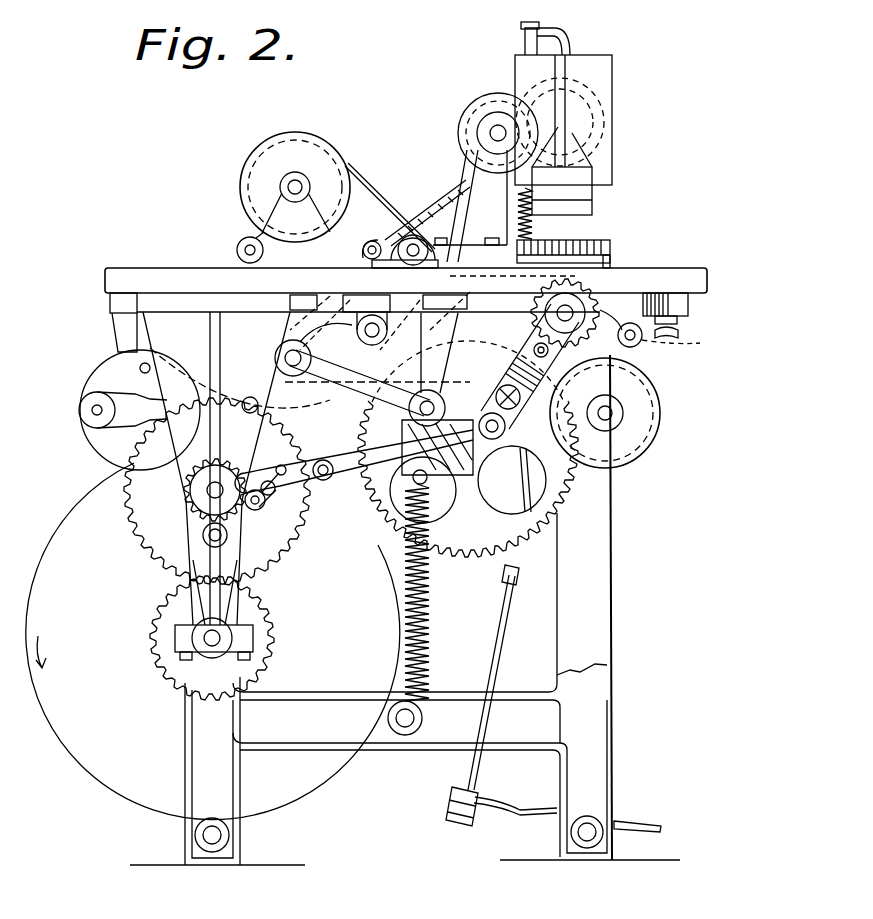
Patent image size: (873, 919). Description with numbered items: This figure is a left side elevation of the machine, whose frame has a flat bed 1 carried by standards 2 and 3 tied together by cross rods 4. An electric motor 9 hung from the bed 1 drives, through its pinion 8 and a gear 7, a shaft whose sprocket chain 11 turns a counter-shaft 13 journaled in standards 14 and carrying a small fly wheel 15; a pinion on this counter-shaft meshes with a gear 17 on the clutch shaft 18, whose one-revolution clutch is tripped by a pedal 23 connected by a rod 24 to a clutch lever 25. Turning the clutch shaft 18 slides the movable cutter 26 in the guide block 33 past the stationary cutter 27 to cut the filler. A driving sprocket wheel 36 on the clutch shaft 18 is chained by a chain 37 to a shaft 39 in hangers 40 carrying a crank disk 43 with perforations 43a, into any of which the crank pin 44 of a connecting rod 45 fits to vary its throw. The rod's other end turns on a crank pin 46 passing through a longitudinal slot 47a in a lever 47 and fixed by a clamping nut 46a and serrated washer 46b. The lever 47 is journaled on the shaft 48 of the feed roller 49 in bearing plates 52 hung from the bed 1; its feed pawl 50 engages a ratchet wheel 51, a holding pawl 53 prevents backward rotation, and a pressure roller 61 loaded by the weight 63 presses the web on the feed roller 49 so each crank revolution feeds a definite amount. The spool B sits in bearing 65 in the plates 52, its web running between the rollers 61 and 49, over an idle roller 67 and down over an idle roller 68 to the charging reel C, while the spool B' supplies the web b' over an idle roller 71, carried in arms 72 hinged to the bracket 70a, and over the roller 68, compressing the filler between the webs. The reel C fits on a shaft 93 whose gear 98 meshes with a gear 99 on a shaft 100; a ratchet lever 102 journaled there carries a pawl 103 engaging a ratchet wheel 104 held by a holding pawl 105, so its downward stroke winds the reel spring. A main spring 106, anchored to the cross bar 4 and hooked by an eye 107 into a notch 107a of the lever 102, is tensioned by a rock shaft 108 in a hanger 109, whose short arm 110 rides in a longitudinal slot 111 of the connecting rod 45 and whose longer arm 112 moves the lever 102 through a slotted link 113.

The table or bed 1 is at (142, 278).
The standard 2 is at (598, 738).
The standard 3 is at (590, 642).
The cross rods 4 is at (229, 835).
The gear 7 is at (478, 548).
The pinion 8 is at (354, 457).
The electric motor 9 is at (326, 332).
The sprocket chain 11 is at (478, 168).
The counter-shaft 13 is at (490, 130).
The standards 14 is at (518, 214).
The fly wheel 15 is at (494, 95).
The gear 17 is at (612, 140).
The clutch shaft 18 is at (600, 128).
The pedal 23 is at (620, 820).
The rod 24 is at (522, 42).
The clutch lever 25 is at (568, 34).
The movable knife or cutter 26 is at (592, 205).
The stationary cutter 27 is at (605, 240).
The guide block 33 is at (600, 74).
The driving sprocket wheel 36 is at (590, 120).
The chain 37 is at (440, 192).
The shaft 39 is at (120, 450).
The hangers 40 is at (112, 336).
The crank disk 43 is at (100, 445).
The perforations 43a is at (140, 367).
The crank pin 44 is at (92, 408).
The connecting rod 45 is at (90, 420).
The crank pin 46 is at (575, 430).
The clamping nut 46a is at (497, 390).
The serrated washer 46b is at (547, 356).
The lever 47 is at (507, 427).
The longitudinal slot 47a is at (512, 480).
The shaft 48 is at (590, 296).
The feed roller 49 is at (580, 246).
The feed pawl 50 is at (640, 360).
The ratchet wheel 51 is at (670, 338).
The bearing plates 52 is at (655, 383).
The holding pawl 53 is at (545, 312).
The pressure roller 61 is at (515, 350).
The weight 63 is at (448, 500).
The bearing 65 is at (612, 422).
The idle roller 67 is at (458, 260).
The idle roller 68 is at (388, 328).
The bracket 70a is at (246, 238).
The idle roller 71 is at (411, 232).
The arms 72 is at (370, 240).
The shaft 93 is at (212, 645).
The gear 98 is at (175, 640).
The gear 99 is at (145, 520).
The shaft 100 is at (192, 496).
The ratchet lever 102 is at (356, 470).
The pawl 103 is at (255, 480).
The ratchet wheel 104 is at (203, 535).
The holding pawl 105 is at (185, 585).
The main spring 106 is at (428, 634).
The eye 107 is at (445, 505).
The notches 107a is at (509, 491).
The rock shaft 108 is at (312, 352).
The hanger 109 is at (440, 352).
The short arm 110 is at (410, 420).
The longitudinal slot 111 is at (200, 365).
The longer arm 112 is at (350, 365).
The link 113 is at (250, 396).
The web-holding spool B is at (617, 413).
The spool B' is at (285, 183).
The web b' is at (390, 206).
The charging reel C is at (213, 641).